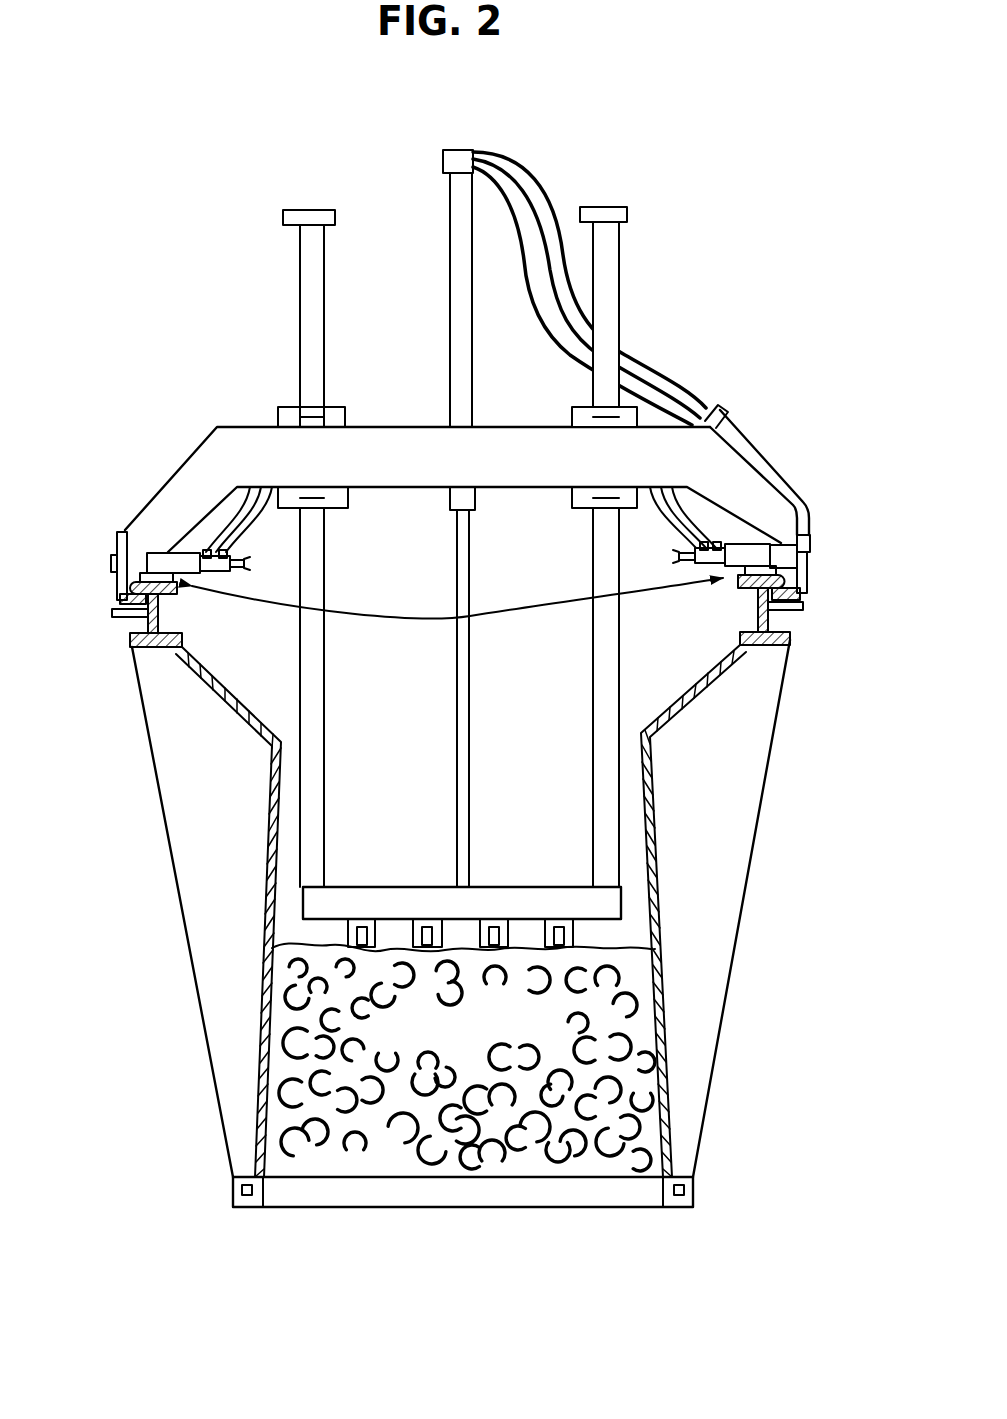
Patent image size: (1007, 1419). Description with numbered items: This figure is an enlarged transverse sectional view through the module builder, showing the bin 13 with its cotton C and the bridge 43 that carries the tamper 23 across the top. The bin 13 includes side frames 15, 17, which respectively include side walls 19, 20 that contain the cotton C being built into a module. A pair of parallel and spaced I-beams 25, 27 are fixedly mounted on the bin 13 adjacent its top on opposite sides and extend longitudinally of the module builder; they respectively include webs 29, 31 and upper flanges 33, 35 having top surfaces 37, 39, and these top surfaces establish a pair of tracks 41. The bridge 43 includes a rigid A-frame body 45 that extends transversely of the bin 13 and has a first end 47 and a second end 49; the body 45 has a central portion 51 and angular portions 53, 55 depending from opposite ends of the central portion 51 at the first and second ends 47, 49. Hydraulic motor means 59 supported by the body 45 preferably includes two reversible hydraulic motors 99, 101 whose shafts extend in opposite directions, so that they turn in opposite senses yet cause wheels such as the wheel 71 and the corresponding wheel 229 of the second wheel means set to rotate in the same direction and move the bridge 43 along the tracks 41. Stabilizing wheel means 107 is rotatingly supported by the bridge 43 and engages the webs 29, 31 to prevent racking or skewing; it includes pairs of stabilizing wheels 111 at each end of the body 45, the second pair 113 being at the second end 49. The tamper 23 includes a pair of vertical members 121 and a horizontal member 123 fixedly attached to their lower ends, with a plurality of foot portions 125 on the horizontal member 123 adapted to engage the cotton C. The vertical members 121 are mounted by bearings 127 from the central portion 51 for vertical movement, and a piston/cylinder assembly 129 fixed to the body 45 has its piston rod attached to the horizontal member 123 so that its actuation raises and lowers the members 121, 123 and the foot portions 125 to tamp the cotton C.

The bin 13 is at (751, 924).
The side frame 15 is at (745, 817).
The side frame 17 is at (160, 752).
The side wall 19 is at (650, 782).
The side wall 20 is at (275, 782).
The tamper 23 is at (566, 178).
The I-beam 25 is at (750, 648).
The I-beam 27 is at (162, 648).
The web 29 is at (762, 612).
The web 31 is at (160, 618).
The upper flange 33 is at (750, 577).
The upper flange 35 is at (176, 592).
The top surface 37 is at (776, 572).
The top surface 39 is at (145, 578).
The tracks 41 is at (400, 612).
The bridge 43 is at (203, 430).
The body 45 is at (757, 380).
The first end 47 is at (818, 603).
The second end 49 is at (117, 582).
The central portion 51 is at (536, 480).
The angular portion 53 is at (745, 472).
The angular portion 55 is at (195, 462).
The hydraulic motor means 59 is at (786, 551).
The second wheel 71 is at (778, 565).
The hydraulic motor 99 is at (748, 552).
The hydraulic motor 101 is at (246, 566).
The stabilizing wheel means 107 is at (822, 611).
The stabilizing wheel 111 is at (120, 618).
The second pair of stabilizing wheels 113 is at (110, 606).
The vertical member 121 is at (300, 273).
The horizontal member 123 is at (480, 897).
The foot portion 125 is at (380, 949).
The bearing 127 is at (330, 413).
The piston/cylinder assembly 129 is at (457, 283).
The wheel 229 is at (160, 553).
The cotton C is at (357, 1152).